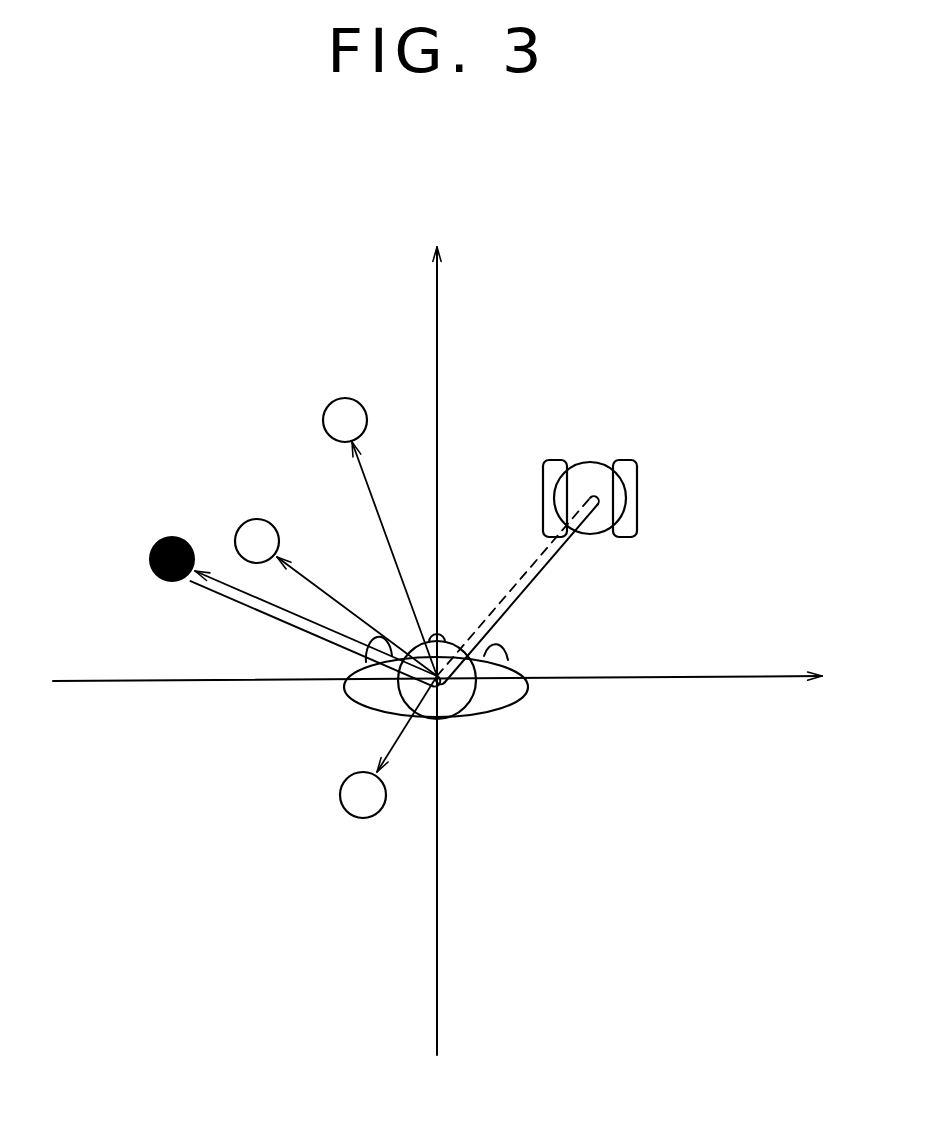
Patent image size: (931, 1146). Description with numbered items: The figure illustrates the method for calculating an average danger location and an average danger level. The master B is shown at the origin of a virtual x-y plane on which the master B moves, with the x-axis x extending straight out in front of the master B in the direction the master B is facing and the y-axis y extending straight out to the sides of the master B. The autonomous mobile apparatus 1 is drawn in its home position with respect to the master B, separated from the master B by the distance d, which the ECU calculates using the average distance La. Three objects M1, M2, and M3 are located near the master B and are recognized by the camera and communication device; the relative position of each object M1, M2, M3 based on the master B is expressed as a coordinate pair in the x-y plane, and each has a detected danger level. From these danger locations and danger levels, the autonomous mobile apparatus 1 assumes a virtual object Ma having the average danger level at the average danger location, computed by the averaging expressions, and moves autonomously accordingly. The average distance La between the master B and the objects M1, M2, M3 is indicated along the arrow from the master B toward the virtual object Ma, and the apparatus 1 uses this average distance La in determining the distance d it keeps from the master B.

The autonomous mobile apparatus 1 is at (638, 495).
The master B is at (535, 692).
The object M1 is at (350, 398).
The object M2 is at (254, 519).
The object M3 is at (350, 816).
The virtual object Ma is at (160, 578).
The average distance La is at (316, 633).
The distance d is at (517, 590).
The x-axis x is at (437, 638).
The y-axis y is at (448, 676).